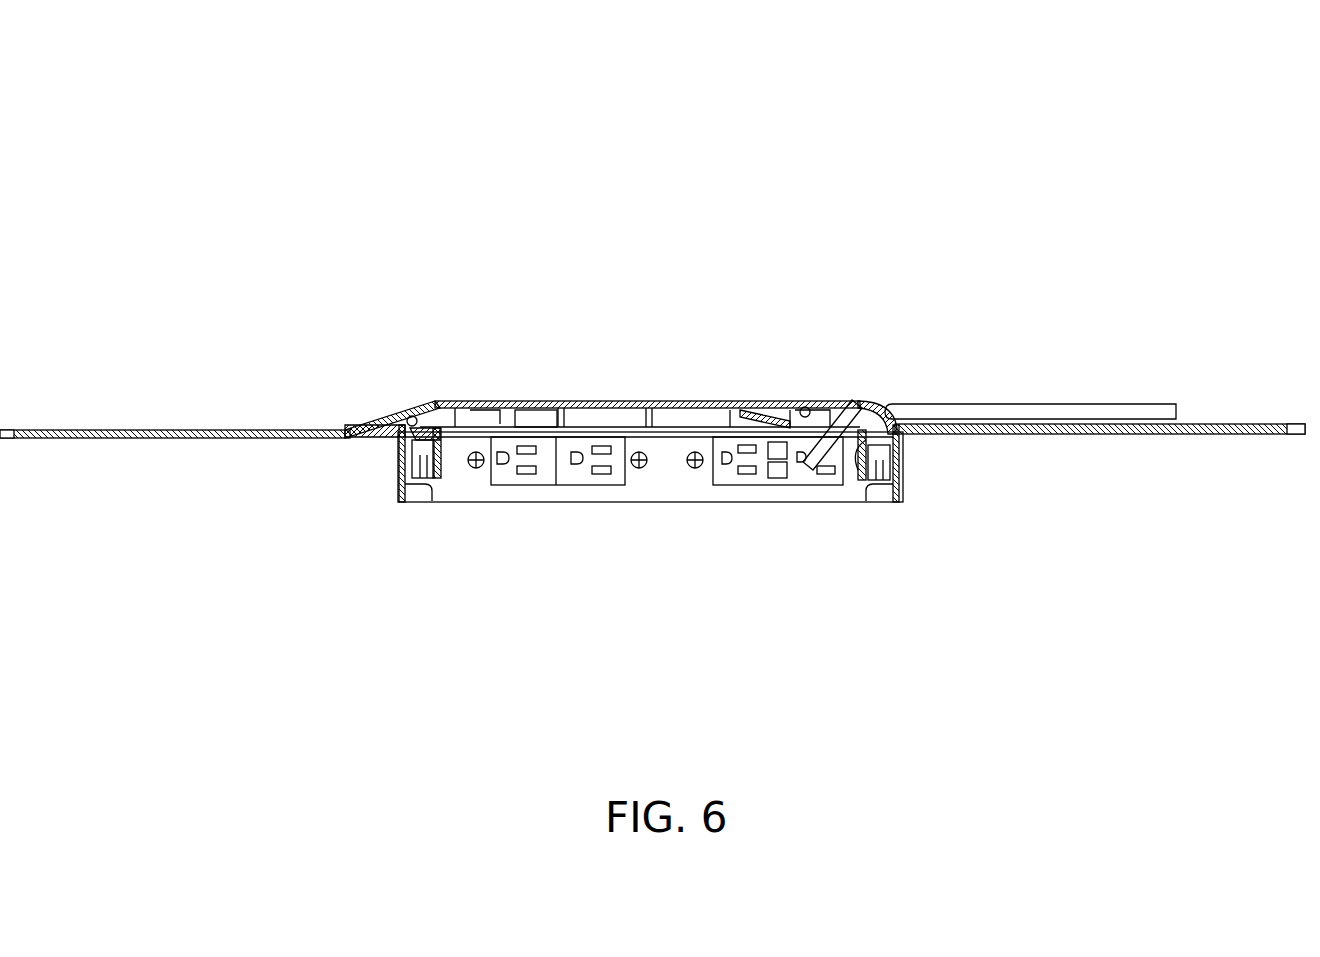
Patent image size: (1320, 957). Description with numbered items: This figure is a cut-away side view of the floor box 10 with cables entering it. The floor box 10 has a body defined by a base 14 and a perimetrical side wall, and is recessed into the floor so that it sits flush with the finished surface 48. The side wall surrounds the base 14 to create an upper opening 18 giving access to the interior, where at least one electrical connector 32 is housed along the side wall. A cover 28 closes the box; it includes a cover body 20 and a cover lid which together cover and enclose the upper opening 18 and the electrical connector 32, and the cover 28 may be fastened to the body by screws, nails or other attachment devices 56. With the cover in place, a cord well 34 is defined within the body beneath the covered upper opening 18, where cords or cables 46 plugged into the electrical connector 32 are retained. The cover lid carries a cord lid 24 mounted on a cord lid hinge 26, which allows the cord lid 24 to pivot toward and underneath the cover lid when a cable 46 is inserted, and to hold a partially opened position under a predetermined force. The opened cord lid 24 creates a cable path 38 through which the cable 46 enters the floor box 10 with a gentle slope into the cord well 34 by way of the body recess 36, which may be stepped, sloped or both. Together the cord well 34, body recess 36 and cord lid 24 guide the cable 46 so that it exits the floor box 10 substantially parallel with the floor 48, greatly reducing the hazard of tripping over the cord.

The floor box 10 is at (958, 226).
The base 14 is at (452, 503).
The upper opening 18 is at (546, 484).
The cover body 20 is at (810, 402).
The cord lid 24 is at (400, 402).
The cord lid hinge 26 is at (441, 402).
The cover 28 is at (586, 402).
The electrical connector 32 is at (822, 485).
The cord well 34 is at (685, 472).
The body recess 36 is at (850, 455).
The cable path 38 is at (877, 403).
The cord or cable 46 is at (1055, 403).
The finished surface of a floor 48 is at (190, 430).
The attachment devices 56 is at (738, 485).